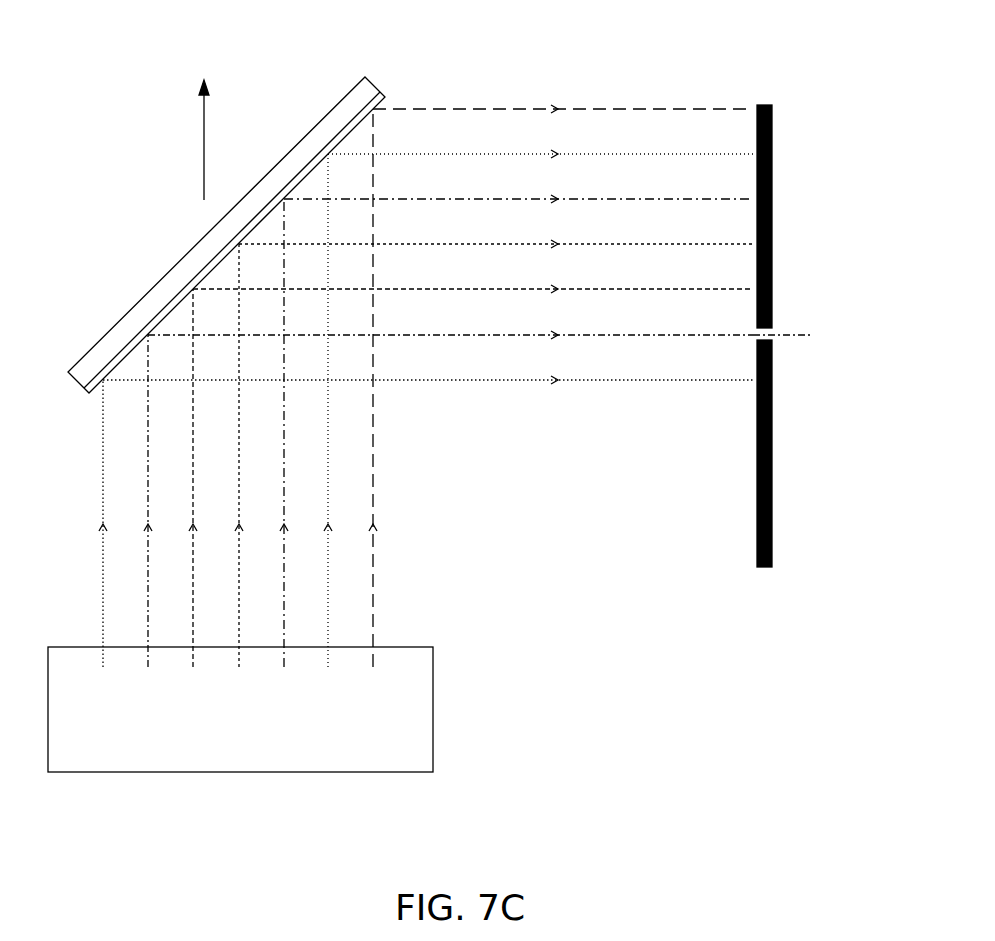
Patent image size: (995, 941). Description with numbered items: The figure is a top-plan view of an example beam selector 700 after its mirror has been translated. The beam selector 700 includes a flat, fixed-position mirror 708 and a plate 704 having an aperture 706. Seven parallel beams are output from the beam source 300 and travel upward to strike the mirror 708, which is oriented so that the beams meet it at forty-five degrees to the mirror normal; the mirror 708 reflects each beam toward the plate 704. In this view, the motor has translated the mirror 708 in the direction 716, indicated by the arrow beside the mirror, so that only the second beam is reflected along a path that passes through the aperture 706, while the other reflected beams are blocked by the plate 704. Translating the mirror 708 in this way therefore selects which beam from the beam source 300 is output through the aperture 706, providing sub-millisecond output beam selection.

The beam selector 700 is at (188, 58).
The direction 716 is at (204, 137).
The mirror 708 is at (335, 105).
The plate 704 is at (772, 175).
The aperture 706 is at (772, 330).
The beam source 300 is at (433, 752).